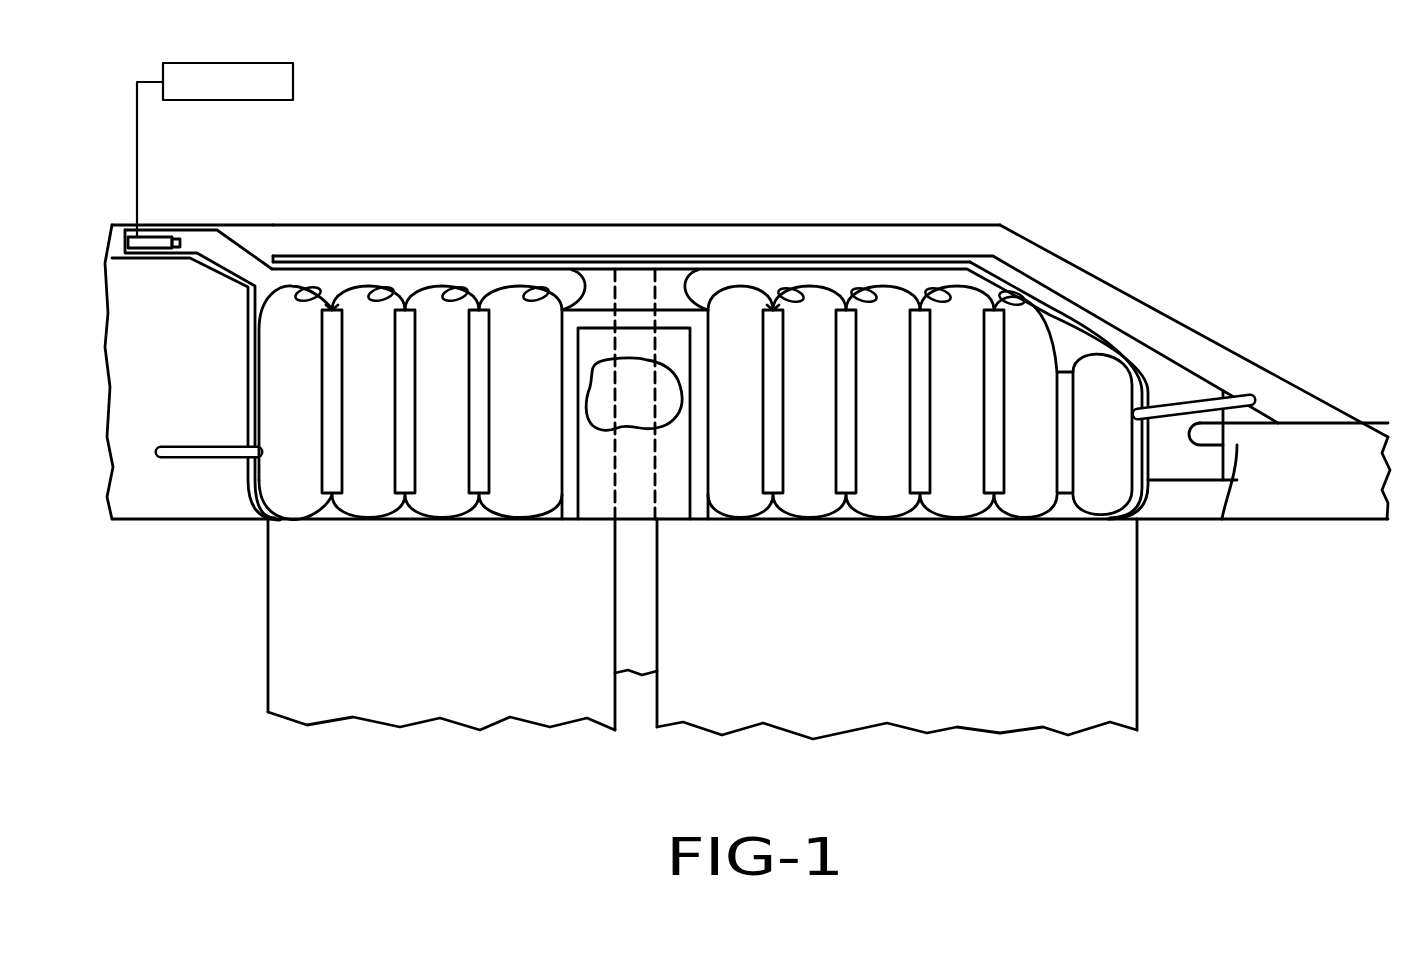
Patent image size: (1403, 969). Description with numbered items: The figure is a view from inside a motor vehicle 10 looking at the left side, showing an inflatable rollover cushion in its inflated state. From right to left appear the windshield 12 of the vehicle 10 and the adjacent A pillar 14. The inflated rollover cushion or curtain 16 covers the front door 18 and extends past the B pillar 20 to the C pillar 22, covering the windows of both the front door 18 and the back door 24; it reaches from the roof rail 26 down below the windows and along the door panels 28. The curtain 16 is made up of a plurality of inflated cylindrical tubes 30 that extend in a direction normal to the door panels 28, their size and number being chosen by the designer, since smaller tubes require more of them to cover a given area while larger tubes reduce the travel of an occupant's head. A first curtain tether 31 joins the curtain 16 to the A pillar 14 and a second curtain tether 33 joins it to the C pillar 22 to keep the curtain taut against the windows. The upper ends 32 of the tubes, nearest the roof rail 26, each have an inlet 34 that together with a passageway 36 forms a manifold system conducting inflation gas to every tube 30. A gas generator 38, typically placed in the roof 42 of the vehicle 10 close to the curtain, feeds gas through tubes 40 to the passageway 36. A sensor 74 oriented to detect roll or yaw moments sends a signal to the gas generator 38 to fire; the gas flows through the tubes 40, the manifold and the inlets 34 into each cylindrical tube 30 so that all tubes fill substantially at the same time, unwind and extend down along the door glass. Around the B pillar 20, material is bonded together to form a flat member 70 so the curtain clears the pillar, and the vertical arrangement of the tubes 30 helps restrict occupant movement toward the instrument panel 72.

The motor vehicle 10 is at (747, 412).
The windshield 12 is at (1138, 322).
The A pillar 14 is at (1165, 377).
The rollover cushion 16 is at (632, 371).
The front door 18 is at (1137, 632).
The B pillar 20 is at (630, 387).
The C pillar 22 is at (160, 487).
The back door 24 is at (268, 662).
The roof rail 26 is at (668, 258).
The door panels 28 is at (517, 688).
The cylindrical tubes 30 is at (505, 502).
The first curtain tether 31 is at (1217, 405).
The upper ends 32 is at (447, 293).
The second curtain tether 33 is at (228, 453).
The inlet 34 is at (512, 290).
The passageway 36 is at (338, 283).
The gas generator 38 is at (148, 240).
The tubes 40 is at (222, 253).
The roof 42 is at (545, 225).
The flat member 70 is at (673, 483).
The instrument panel 72 is at (1232, 455).
The sensor 74 is at (226, 63).